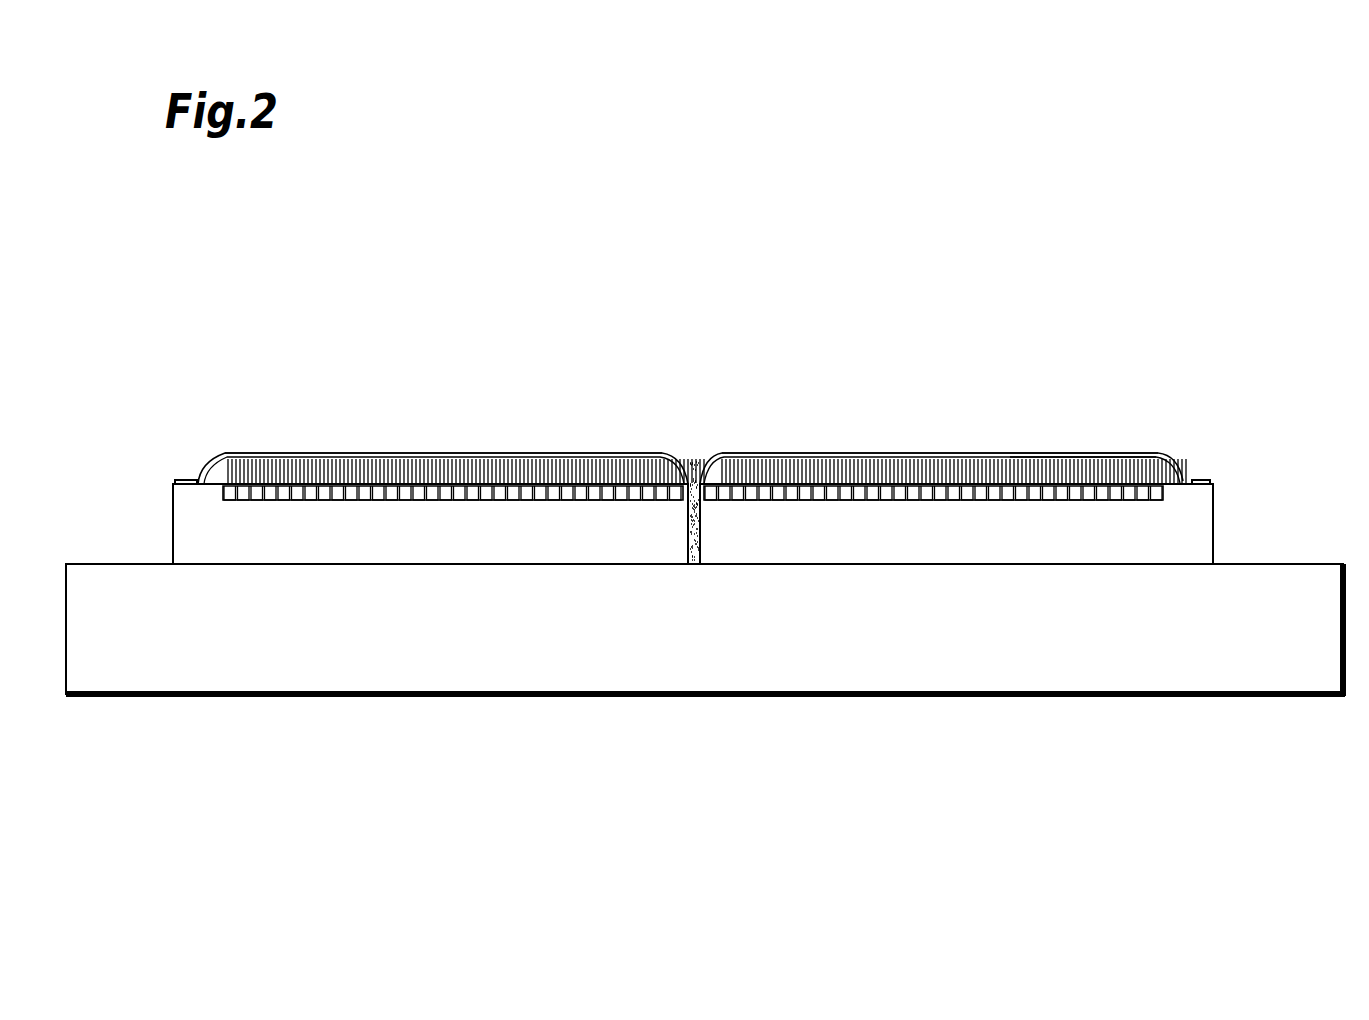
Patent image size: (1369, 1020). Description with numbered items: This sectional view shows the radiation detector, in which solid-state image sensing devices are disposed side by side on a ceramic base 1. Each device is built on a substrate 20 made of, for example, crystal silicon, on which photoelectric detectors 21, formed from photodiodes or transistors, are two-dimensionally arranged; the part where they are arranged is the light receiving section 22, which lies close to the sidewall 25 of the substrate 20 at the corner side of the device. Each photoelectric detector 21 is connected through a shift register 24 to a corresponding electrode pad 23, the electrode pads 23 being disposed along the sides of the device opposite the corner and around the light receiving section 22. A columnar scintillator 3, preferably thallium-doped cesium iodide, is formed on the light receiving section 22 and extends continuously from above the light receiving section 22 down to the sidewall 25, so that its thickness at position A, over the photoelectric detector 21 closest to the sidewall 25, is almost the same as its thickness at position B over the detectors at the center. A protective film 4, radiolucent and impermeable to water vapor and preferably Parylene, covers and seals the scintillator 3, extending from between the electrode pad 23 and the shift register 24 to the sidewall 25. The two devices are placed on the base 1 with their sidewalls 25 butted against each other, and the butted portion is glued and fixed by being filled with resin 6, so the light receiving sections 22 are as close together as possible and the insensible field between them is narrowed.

The ceramic base 1 is at (1257, 672).
The substrate 20 is at (173, 521).
The photoelectric detector 21 is at (1115, 464).
The light receiving section 22 is at (405, 463).
The electrode pad 23 is at (186, 480).
The shift register 24 is at (213, 476).
The sidewall 25 is at (688, 536).
The scintillator 3 is at (1010, 458).
The protective film 4 is at (548, 455).
The resin 6 is at (690, 553).
The position A is at (694, 458).
The position B is at (945, 455).